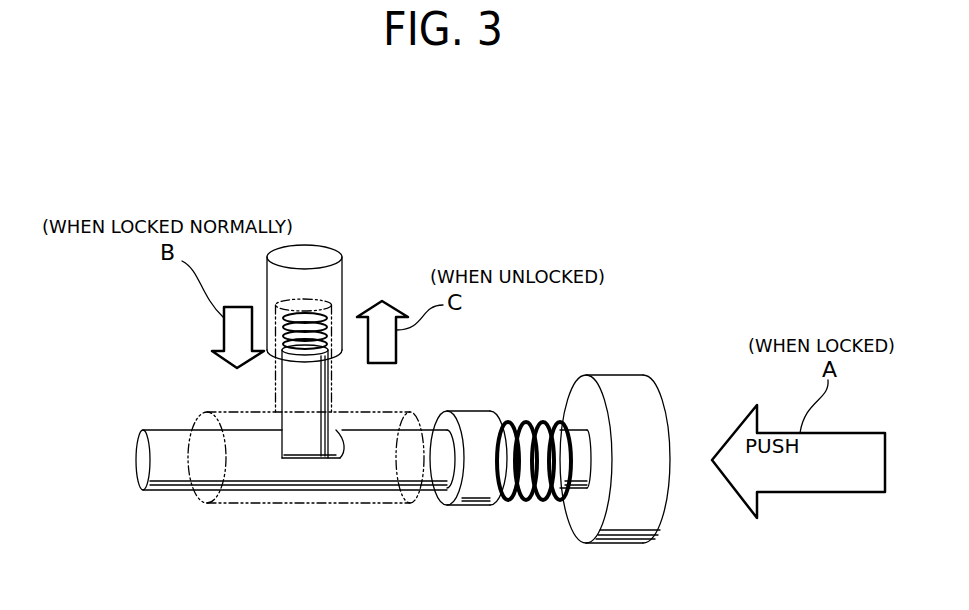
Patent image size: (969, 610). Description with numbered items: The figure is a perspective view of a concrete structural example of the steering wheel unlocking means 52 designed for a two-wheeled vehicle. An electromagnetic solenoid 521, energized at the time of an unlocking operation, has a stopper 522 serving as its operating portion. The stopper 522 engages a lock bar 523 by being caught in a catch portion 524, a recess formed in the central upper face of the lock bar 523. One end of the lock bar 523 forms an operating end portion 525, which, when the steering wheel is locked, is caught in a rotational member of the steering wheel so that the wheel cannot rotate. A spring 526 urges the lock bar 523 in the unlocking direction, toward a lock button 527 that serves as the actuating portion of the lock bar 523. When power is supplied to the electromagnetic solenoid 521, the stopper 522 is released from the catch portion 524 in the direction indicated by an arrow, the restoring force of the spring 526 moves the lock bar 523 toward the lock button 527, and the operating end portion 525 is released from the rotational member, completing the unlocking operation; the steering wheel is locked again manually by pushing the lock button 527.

The steering wheel unlocking means 52 is at (523, 334).
The electromagnetic solenoid 521 is at (335, 286).
The stopper 522 is at (312, 392).
The lock bar 523 is at (273, 487).
The catch portion 524 is at (298, 460).
The operating end portion 525 is at (148, 467).
The spring 526 is at (550, 500).
The lock button 527 is at (607, 387).